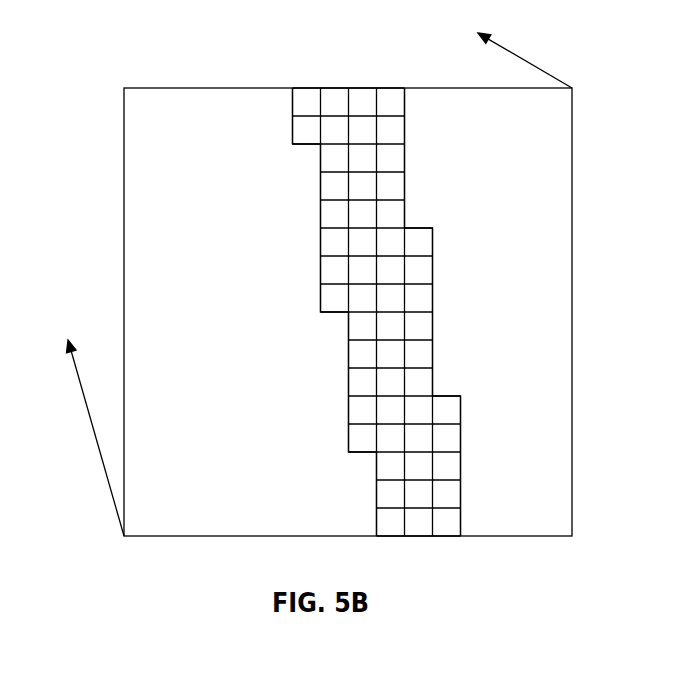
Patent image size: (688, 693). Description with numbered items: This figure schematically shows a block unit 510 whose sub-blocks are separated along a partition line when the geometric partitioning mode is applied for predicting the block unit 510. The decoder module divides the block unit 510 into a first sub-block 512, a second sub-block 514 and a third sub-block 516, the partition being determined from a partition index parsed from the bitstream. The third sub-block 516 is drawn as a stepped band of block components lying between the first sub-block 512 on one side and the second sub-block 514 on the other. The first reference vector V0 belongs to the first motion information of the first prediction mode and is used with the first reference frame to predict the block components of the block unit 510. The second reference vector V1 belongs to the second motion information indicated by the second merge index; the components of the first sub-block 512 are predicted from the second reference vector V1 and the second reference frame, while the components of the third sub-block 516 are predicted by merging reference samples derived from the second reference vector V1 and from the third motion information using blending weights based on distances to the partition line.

The block unit 510 is at (264, 87).
The first sub-block 512 is at (322, 452).
The second sub-block 514 is at (558, 257).
The third sub-block 516 is at (320, 267).
The first reference vector V0 is at (525, 62).
The second reference vector V1 is at (90, 417).